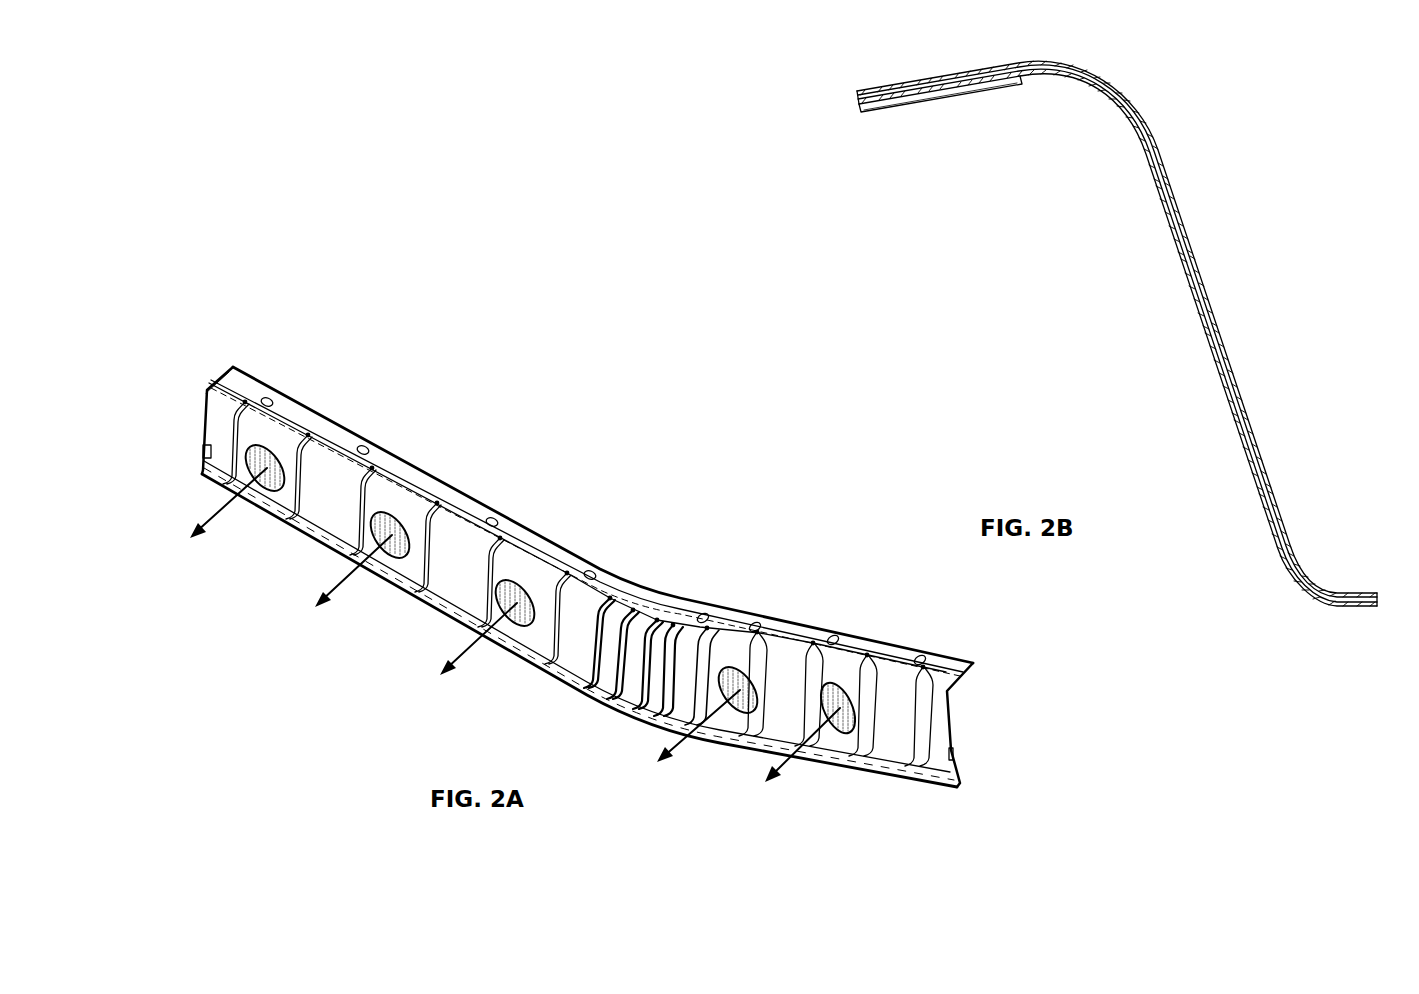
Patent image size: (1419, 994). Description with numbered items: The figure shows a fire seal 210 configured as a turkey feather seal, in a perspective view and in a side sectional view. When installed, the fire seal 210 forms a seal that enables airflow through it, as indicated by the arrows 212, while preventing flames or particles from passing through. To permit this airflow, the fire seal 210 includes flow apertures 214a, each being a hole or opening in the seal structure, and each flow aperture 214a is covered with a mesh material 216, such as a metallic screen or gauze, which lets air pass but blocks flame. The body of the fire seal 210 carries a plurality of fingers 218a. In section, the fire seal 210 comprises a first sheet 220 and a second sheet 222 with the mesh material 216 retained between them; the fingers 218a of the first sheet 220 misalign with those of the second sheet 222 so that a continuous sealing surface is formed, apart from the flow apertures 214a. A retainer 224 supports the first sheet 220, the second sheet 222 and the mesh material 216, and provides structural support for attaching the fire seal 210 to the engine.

In FIG. 2A, the fire seal 210 is at (681, 412).
In FIG. 2B, the fire seal 210 is at (1117, 333).
In FIG. 2A, the arrows 212 is at (206, 524).
In FIG. 2A, the flow apertures 214a is at (273, 485).
In FIG. 2A, the mesh material 216 is at (551, 589).
In FIG. 2B, the mesh material 216 is at (1223, 342).
In FIG. 2A, the fingers 218a is at (317, 498).
In FIG. 2A, the first sheet 220 is at (214, 432).
In FIG. 2B, the first sheet 220 is at (1203, 273).
In FIG. 2B, the second sheet 222 is at (1228, 390).
In FIG. 2B, the retainer 224 is at (937, 100).